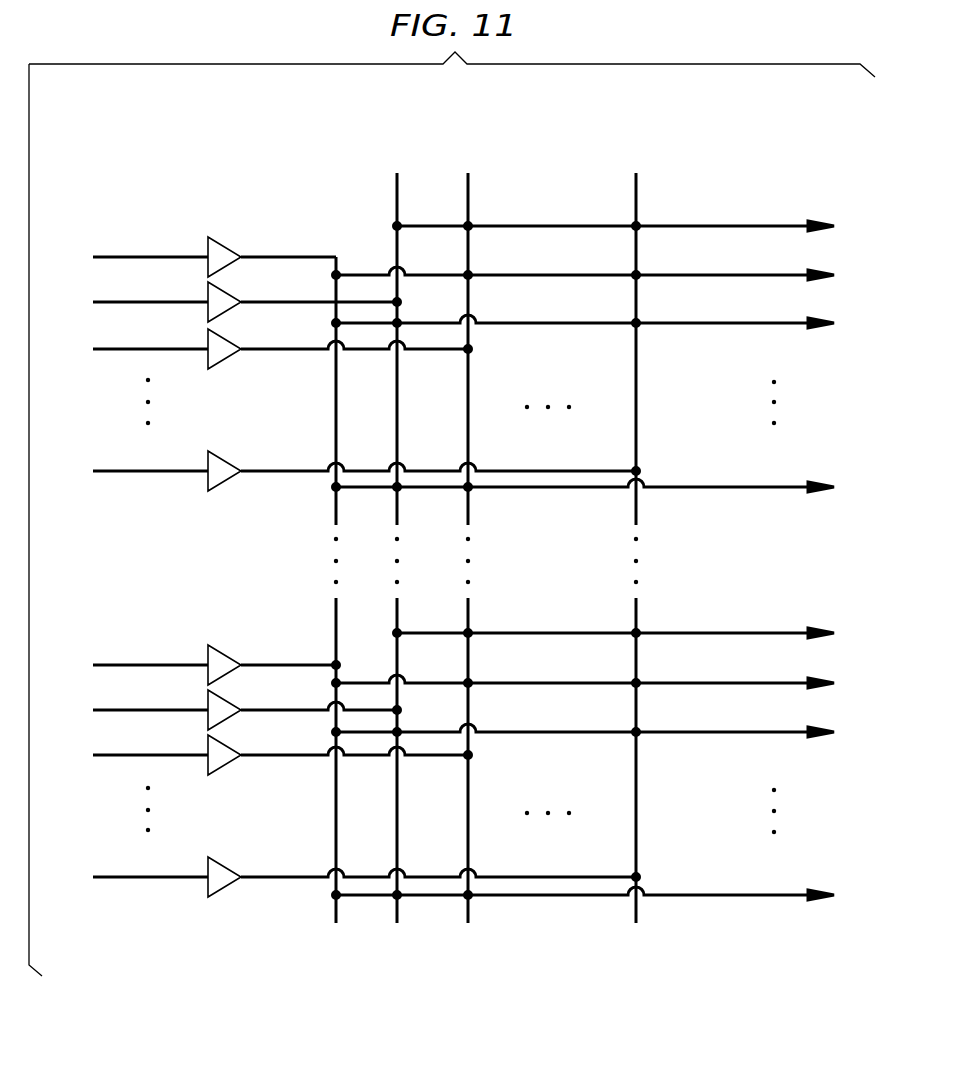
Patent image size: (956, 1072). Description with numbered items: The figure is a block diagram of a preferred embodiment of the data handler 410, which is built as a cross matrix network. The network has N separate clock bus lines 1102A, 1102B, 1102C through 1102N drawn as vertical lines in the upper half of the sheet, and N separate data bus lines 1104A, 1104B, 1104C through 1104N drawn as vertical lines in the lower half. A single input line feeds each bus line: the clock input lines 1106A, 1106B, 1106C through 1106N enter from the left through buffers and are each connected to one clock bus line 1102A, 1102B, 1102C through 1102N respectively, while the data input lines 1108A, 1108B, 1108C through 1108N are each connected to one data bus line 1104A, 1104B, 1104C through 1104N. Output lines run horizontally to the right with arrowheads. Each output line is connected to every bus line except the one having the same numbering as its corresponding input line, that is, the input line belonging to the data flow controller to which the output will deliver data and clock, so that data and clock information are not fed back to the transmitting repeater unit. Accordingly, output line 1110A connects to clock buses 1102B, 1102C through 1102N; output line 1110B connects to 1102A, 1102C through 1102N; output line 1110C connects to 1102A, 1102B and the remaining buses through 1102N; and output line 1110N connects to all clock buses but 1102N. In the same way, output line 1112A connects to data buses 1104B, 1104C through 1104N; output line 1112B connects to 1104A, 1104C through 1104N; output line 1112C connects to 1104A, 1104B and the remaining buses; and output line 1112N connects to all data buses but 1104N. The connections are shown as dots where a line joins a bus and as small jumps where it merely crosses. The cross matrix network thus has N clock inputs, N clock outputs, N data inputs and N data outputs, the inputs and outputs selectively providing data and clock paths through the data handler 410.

The data handler 410 is at (603, 130).
The clock bus line 1102A is at (336, 408).
The clock bus line 1102B is at (397, 435).
The clock bus line 1102C is at (468, 397).
The clock bus line 1102N is at (636, 393).
The data bus line 1104A is at (336, 815).
The data bus line 1104B is at (397, 842).
The data bus line 1104C is at (468, 804).
The data bus line 1104N is at (636, 801).
The input line 1106A is at (113, 257).
The input line 1106B is at (113, 303).
The input line 1106C is at (113, 350).
The input line 1106N is at (113, 472).
The input line 1108A is at (113, 665).
The input line 1108B is at (113, 710).
The input line 1108C is at (113, 755).
The input line 1108N is at (113, 877).
The output line 1110A is at (798, 220).
The output line 1110B is at (798, 269).
The output line 1110C is at (798, 317).
The output line 1110N is at (798, 481).
The output line 1112A is at (798, 627).
The output line 1112B is at (798, 677).
The output line 1112C is at (798, 726).
The output line 1112N is at (798, 889).